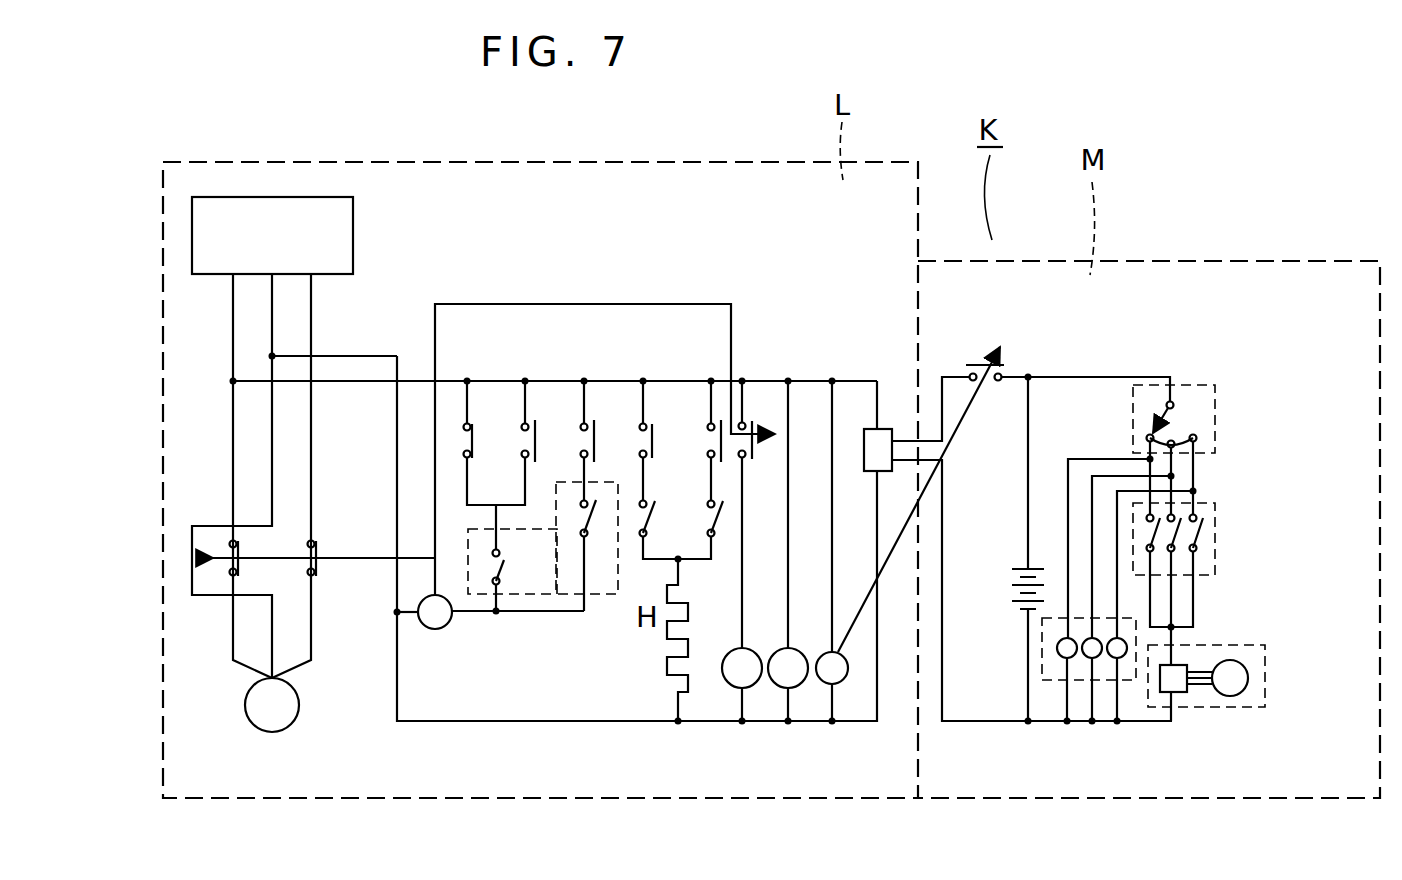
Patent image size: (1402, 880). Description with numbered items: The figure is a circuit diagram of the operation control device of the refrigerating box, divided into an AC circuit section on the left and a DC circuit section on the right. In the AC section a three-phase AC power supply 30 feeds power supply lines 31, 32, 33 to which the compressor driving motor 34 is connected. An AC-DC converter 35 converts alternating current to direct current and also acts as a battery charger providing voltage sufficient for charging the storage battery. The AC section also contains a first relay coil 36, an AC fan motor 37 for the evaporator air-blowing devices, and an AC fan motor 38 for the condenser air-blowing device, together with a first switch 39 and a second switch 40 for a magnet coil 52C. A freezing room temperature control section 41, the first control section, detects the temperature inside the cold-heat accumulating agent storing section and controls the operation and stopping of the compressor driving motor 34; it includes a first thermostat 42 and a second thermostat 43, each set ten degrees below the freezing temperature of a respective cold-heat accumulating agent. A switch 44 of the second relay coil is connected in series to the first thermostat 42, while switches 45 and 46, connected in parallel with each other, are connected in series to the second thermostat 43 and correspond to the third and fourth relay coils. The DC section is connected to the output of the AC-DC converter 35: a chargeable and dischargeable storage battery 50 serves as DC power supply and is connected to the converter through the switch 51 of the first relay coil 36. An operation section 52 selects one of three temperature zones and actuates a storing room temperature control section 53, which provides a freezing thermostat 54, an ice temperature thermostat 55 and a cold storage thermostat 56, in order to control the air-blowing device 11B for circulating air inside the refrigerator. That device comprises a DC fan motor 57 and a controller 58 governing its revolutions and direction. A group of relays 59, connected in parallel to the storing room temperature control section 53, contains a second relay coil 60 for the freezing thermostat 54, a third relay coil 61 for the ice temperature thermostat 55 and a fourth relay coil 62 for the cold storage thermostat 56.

The three-phase AC power supply 30 is at (353, 205).
The power supply line 31 is at (233, 318).
The power supply line 32 is at (272, 330).
The power supply line 33 is at (311, 296).
The compressor driving motor 34 is at (297, 718).
The AC-DC converter 35 is at (886, 427).
The first relay coil 36 is at (843, 684).
The AC fan motor 37 is at (800, 688).
The AC fan motor 38 is at (735, 688).
The first switch 39 is at (757, 427).
The second switch 40 is at (317, 572).
The freezing room temperature control section 41 is at (565, 587).
The first thermostat 42 is at (593, 527).
The second thermostat 43 is at (502, 565).
The switch of second relay coil 44 is at (607, 435).
The switch 45 is at (548, 435).
The switch 46 is at (482, 435).
The storage battery 50 is at (1013, 570).
The switch of first relay coil 51 is at (975, 366).
The operation section 52 is at (1215, 395).
The magnet coil 52C is at (435, 629).
The storing room temperature control section 53 is at (1212, 503).
The freezing thermostat 54 is at (1202, 528).
The ice temperature thermostat 55 is at (1173, 530).
The cold storage thermostat 56 is at (1157, 537).
The DC fan motor 57 is at (1240, 695).
The controller 58 is at (1180, 692).
The group of relays 59 is at (1130, 676).
The second relay coil 60 is at (1110, 658).
The third relay coil 61 is at (1085, 658).
The fourth relay coil 62 is at (1060, 658).
The air-blowing device 11B is at (1265, 662).